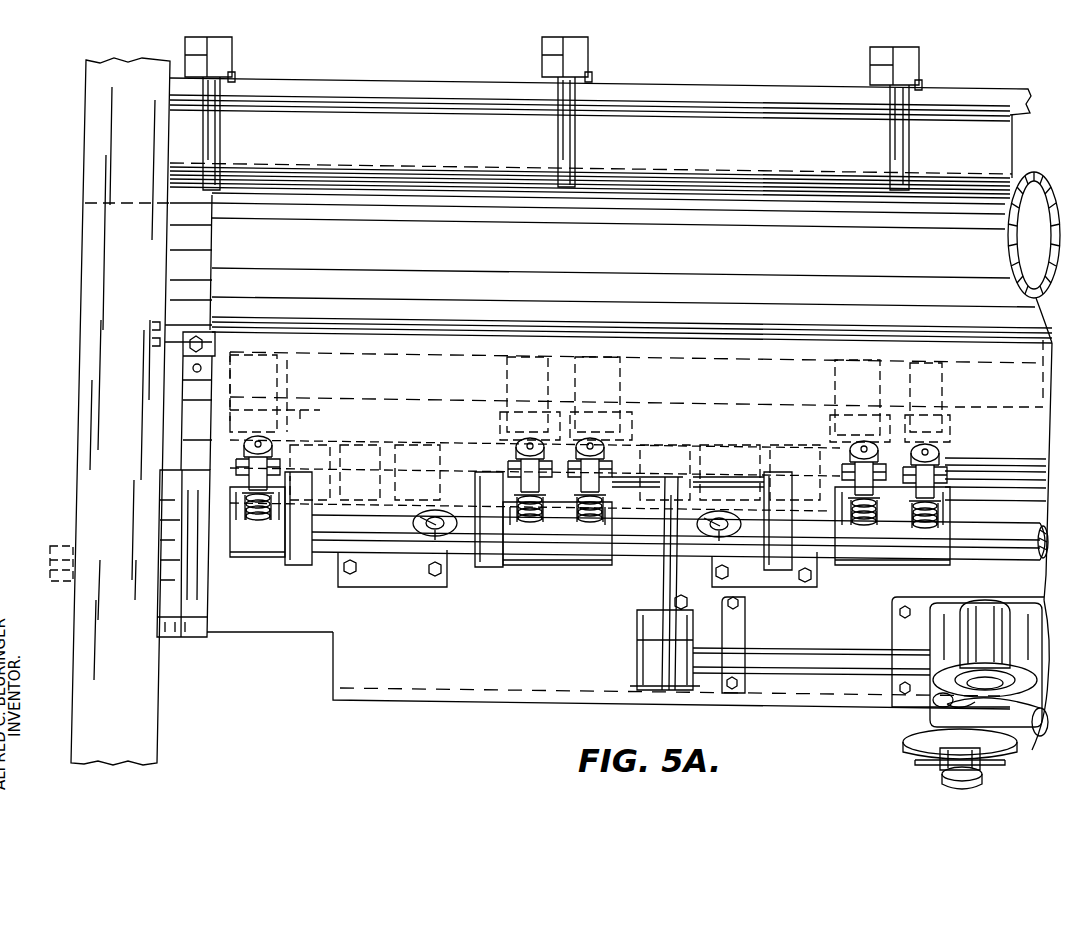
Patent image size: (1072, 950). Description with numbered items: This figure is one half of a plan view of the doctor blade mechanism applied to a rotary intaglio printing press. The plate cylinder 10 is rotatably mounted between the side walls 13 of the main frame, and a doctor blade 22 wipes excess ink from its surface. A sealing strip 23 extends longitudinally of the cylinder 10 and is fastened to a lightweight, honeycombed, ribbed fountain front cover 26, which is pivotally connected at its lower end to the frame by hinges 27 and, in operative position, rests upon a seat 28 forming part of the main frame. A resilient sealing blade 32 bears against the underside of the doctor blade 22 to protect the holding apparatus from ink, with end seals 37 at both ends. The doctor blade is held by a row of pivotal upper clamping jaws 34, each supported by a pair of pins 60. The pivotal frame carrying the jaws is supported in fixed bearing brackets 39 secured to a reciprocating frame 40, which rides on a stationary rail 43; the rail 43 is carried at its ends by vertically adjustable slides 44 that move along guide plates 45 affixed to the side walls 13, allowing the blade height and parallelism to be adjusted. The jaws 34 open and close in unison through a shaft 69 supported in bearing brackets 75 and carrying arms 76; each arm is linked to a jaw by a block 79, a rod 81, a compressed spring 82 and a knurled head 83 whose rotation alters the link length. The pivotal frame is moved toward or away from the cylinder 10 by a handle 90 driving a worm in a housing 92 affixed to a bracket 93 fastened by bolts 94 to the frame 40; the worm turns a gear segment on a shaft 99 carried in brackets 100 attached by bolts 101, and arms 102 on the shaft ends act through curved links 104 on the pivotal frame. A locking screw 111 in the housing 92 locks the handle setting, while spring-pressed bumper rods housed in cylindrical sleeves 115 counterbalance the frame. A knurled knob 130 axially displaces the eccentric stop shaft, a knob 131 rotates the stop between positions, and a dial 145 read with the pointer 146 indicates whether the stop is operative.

The plate cylinder 10 is at (594, 262).
The side wall 13 is at (82, 363).
The doctor blade 22 is at (668, 322).
The sealing strip 23 is at (985, 190).
The fountain front cover 26 is at (220, 136).
The hinge 27 is at (222, 50).
The seat 28 is at (400, 88).
The sealing blade 32 is at (183, 345).
The upper clamping jaw 34 is at (396, 332).
The end seal 37 is at (160, 322).
The bracket 39 is at (402, 587).
The reciprocating frame 40 is at (333, 655).
The stationary rail 43 is at (242, 636).
The slide 44 is at (200, 586).
The guide plate 45 is at (160, 612).
The pin 60 is at (302, 392).
The shaft 69 is at (1030, 540).
The bracket 75 is at (300, 500).
The arm 76 is at (272, 560).
The block 79 is at (272, 458).
The rod 81 is at (580, 510).
The spring 82 is at (244, 502).
The knurled head 83 is at (262, 438).
The handle 90 is at (1030, 742).
The housing 92 is at (990, 612).
The bracket 93 is at (1040, 612).
The bolt 94 is at (900, 614).
The shaft 99 is at (818, 676).
The bracket 100 is at (745, 634).
The bolt 101 is at (732, 692).
The arm 102 is at (637, 630).
The curved link 104 is at (665, 582).
The locking screw 111 is at (998, 658).
The cylindrical sleeve 115 is at (468, 505).
The knurled knob 130 is at (970, 786).
The knob 131 is at (950, 770).
The dial 145 is at (905, 744).
The pointer 146 is at (930, 765).